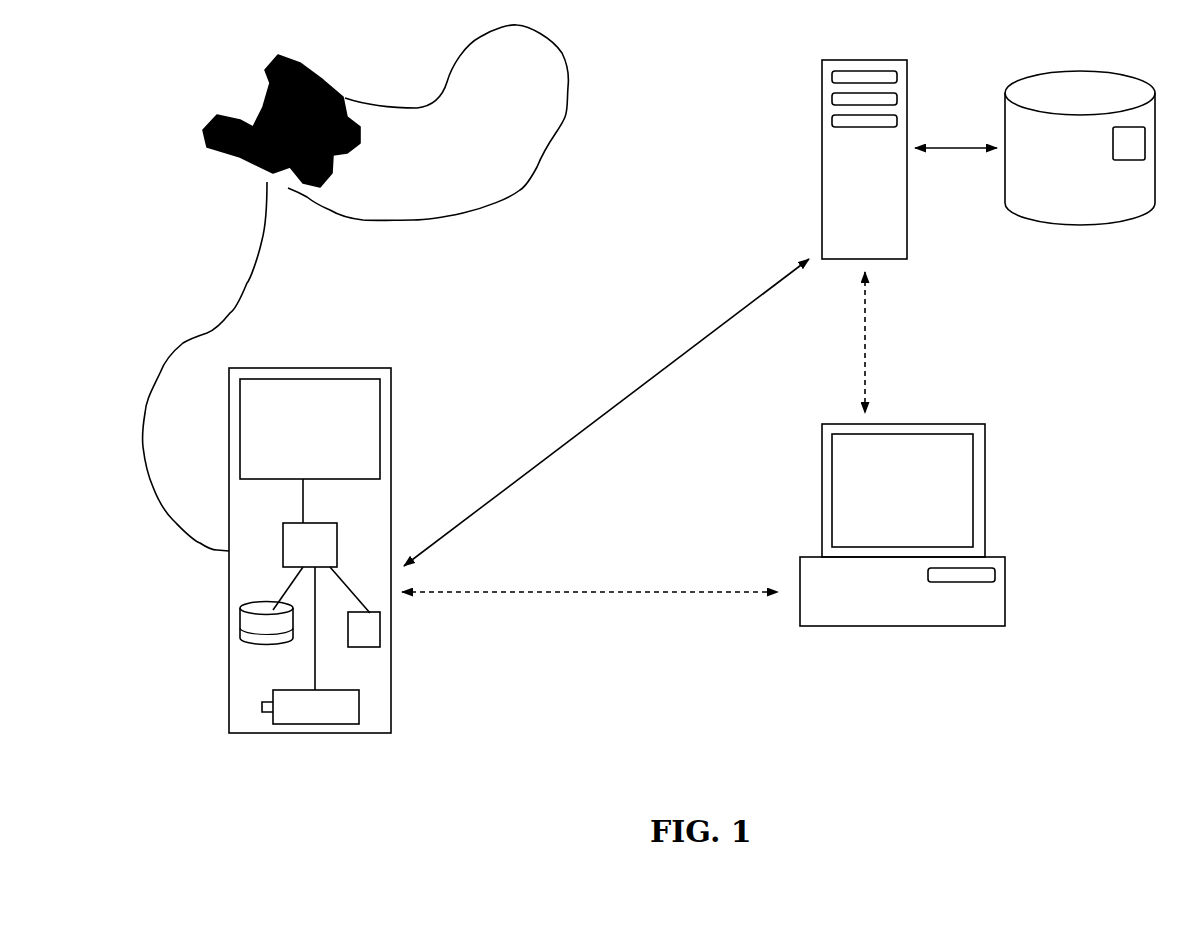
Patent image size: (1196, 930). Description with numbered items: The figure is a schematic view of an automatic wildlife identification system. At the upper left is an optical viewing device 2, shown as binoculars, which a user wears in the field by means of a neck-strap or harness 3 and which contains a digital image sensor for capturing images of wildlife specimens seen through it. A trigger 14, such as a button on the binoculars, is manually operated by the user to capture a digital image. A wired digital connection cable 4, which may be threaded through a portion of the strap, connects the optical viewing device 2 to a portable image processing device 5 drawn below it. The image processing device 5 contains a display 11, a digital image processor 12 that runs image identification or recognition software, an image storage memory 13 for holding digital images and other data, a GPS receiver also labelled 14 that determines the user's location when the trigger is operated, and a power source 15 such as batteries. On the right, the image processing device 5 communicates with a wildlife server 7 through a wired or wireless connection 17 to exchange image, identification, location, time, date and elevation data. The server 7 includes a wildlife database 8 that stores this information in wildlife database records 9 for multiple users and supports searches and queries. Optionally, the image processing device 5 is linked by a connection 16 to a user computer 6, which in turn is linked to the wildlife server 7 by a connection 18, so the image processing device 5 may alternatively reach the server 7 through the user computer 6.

The optical viewing device 2 is at (197, 148).
The neck-strap 3 is at (478, 41).
The connection cable 4 is at (250, 278).
The image processing device 5 is at (372, 369).
The user computer 6 is at (822, 517).
The wildlife server 7 is at (810, 103).
The wildlife database 8 is at (1005, 214).
The wildlife database record 9 is at (1145, 148).
The display 11 is at (380, 427).
The digital image processor 12 is at (337, 543).
The image storage memory 13 is at (239, 625).
The trigger 14 is at (380, 628).
The power source 15 is at (358, 700).
The connection 16 is at (605, 603).
The wired or wireless connection 17 is at (626, 380).
The connection 18 is at (875, 348).